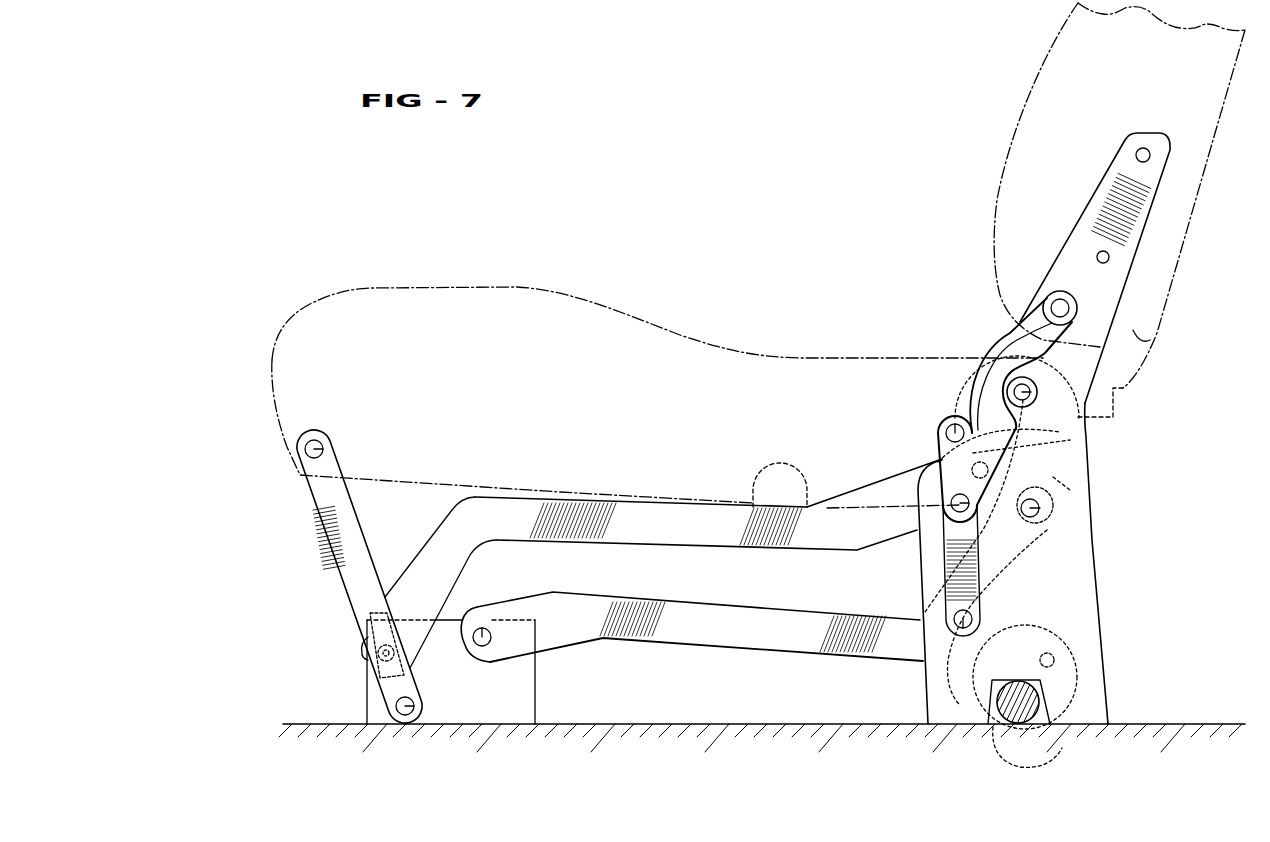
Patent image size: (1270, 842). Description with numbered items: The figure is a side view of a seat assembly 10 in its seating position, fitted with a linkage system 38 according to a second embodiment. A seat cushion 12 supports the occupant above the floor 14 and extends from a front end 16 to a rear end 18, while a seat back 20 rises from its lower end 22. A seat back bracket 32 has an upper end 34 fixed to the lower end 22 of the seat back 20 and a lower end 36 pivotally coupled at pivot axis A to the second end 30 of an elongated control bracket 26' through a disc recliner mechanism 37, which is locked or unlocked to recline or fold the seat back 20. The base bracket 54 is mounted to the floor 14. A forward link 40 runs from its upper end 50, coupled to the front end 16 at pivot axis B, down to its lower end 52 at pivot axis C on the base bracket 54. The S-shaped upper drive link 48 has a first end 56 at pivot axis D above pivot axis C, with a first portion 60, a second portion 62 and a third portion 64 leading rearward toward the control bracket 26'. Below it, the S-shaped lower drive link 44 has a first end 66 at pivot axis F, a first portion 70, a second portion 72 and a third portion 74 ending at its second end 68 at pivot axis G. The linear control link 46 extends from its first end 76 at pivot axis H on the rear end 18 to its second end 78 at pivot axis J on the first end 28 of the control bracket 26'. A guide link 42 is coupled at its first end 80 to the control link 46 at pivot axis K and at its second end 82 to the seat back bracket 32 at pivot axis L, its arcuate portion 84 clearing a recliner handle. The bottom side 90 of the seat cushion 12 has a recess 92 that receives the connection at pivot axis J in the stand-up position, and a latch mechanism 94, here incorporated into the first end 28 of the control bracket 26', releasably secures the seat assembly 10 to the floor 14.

The seat assembly 10 is at (822, 134).
The seat cushion 12 is at (517, 287).
The floor 14 is at (283, 723).
The front end 16 is at (272, 360).
The rear end 18 is at (1115, 392).
The seat back 20 is at (1018, 110).
The lower end 22 is at (1140, 333).
The elongated control bracket 26' is at (1097, 492).
The first end 28 is at (1093, 695).
The second end 30 is at (1067, 372).
The seat back bracket 32 is at (1073, 262).
The upper end 34 is at (1135, 150).
The lower end 36 is at (1095, 460).
The disc recliner mechanism 37 is at (1085, 415).
The linkage system 38 is at (1112, 582).
The forward link 40 is at (320, 510).
The guide link 42 is at (975, 356).
The lower drive link 44 is at (587, 644).
The control link 46 is at (943, 570).
The upper drive link 48 is at (450, 497).
The upper end 50 is at (308, 463).
The lower end 52 is at (420, 703).
The base bracket 54 is at (535, 705).
The first end 56 is at (415, 643).
The first portion 60 is at (417, 565).
The second portion 62 is at (666, 528).
The third portion 64 is at (912, 532).
The first end 66 is at (507, 650).
The second end 68 is at (1050, 525).
The first portion 70 is at (536, 597).
The second portion 72 is at (715, 638).
The third portion 74 is at (1010, 570).
The first end 76 is at (942, 437).
The second end 78 is at (982, 618).
The first end 80 is at (946, 472).
The second end 82 is at (1070, 305).
The arcuate portion 84 is at (982, 400).
The bottom side 90 is at (828, 512).
The recess 92 is at (792, 500).
The latch mechanism 94 is at (1060, 752).
The pivot axis A is at (1000, 375).
The pivot axis B is at (322, 442).
The pivot axis C is at (407, 724).
The pivot axis D is at (378, 658).
The pivot axis F is at (483, 635).
The pivot axis G is at (1042, 508).
The pivot axis H is at (950, 430).
The pivot axis J is at (960, 630).
The pivot axis K is at (952, 500).
The pivot axis L is at (1030, 323).